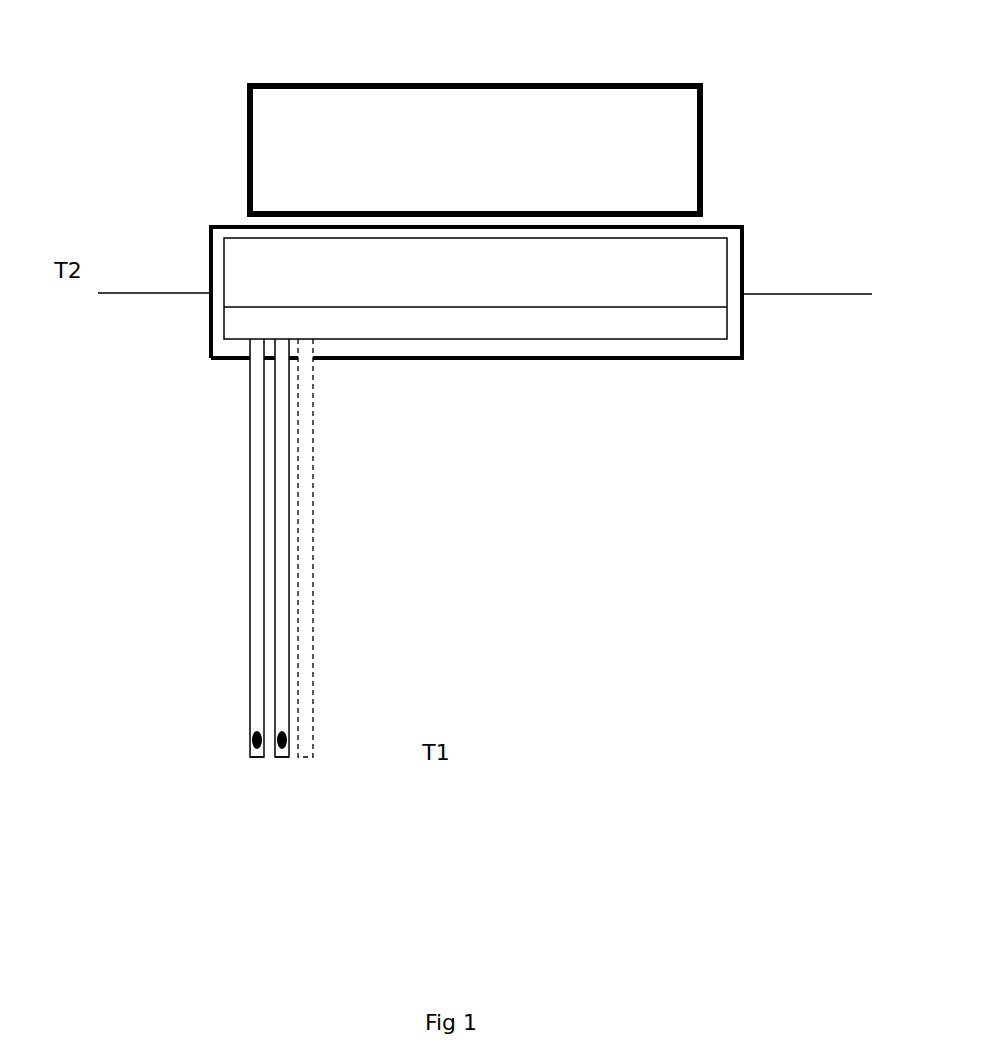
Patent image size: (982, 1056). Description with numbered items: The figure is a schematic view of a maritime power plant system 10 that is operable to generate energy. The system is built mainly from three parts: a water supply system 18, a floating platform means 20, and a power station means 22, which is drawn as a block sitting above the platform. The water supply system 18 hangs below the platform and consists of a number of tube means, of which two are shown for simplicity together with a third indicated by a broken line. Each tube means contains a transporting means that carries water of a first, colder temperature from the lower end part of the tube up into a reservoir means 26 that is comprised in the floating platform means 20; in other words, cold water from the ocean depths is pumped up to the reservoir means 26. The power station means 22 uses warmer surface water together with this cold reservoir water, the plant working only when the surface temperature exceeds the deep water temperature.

The maritime power plant system 10 is at (195, 63).
The power station means 22 is at (705, 140).
The floating platform means 20 is at (211, 263).
The reservoir means 26 is at (238, 319).
The water supply system 18 is at (260, 584).